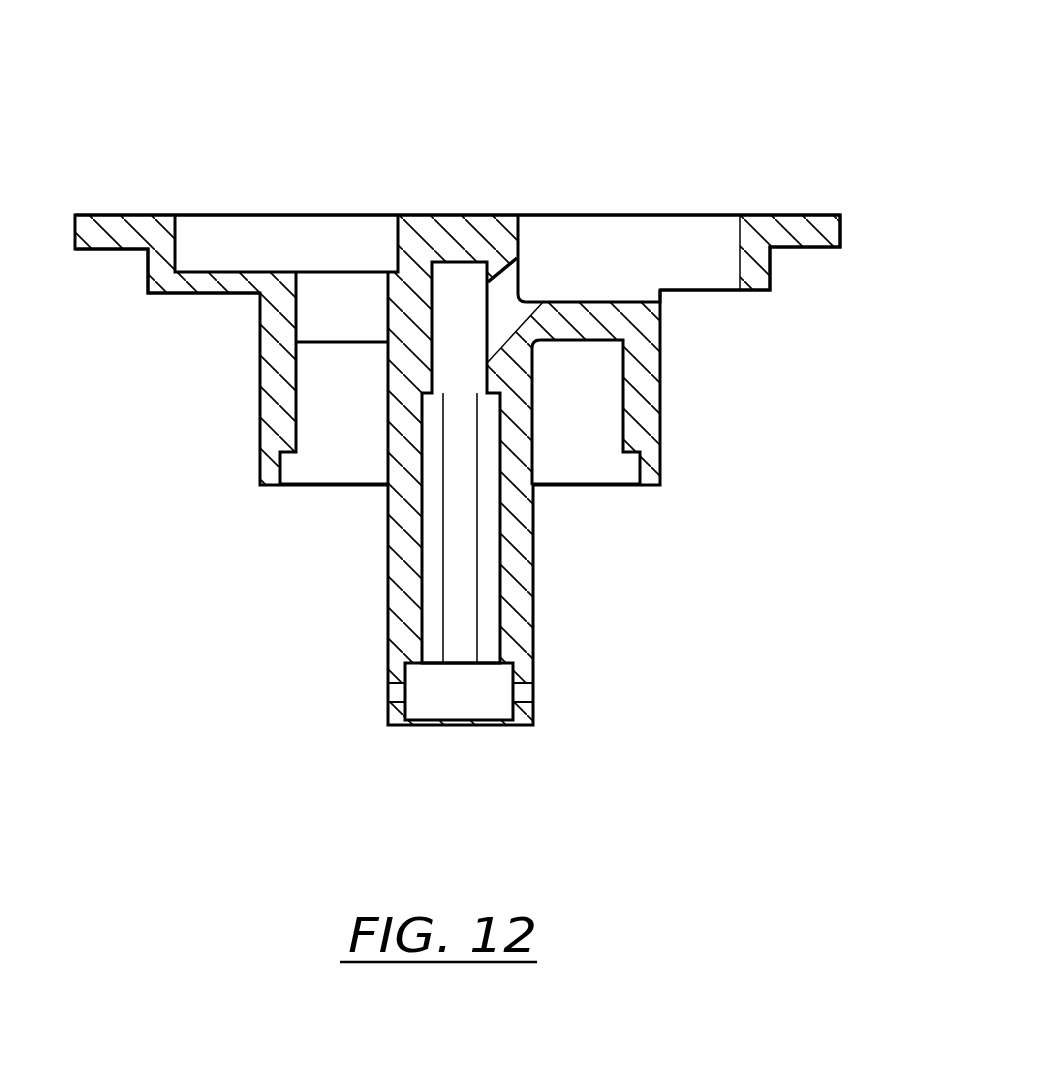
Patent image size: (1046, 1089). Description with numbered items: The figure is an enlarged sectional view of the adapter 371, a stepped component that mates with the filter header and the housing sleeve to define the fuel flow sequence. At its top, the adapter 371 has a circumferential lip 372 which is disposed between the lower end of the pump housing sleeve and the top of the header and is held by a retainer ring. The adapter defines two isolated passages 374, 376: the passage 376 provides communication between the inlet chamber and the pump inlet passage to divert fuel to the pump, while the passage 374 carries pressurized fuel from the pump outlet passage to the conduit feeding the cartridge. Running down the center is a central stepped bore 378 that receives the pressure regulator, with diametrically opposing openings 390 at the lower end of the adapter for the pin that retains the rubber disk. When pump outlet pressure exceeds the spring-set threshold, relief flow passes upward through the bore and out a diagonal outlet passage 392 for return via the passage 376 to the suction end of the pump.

The adapter 371 is at (625, 112).
The circumferential lip 372 is at (785, 214).
The passage 374 is at (338, 290).
The passage 376 is at (716, 243).
The central stepped bore 378 is at (498, 577).
The diametrically opposing openings 390 is at (395, 692).
The diagonal outlet passage 392 is at (505, 313).